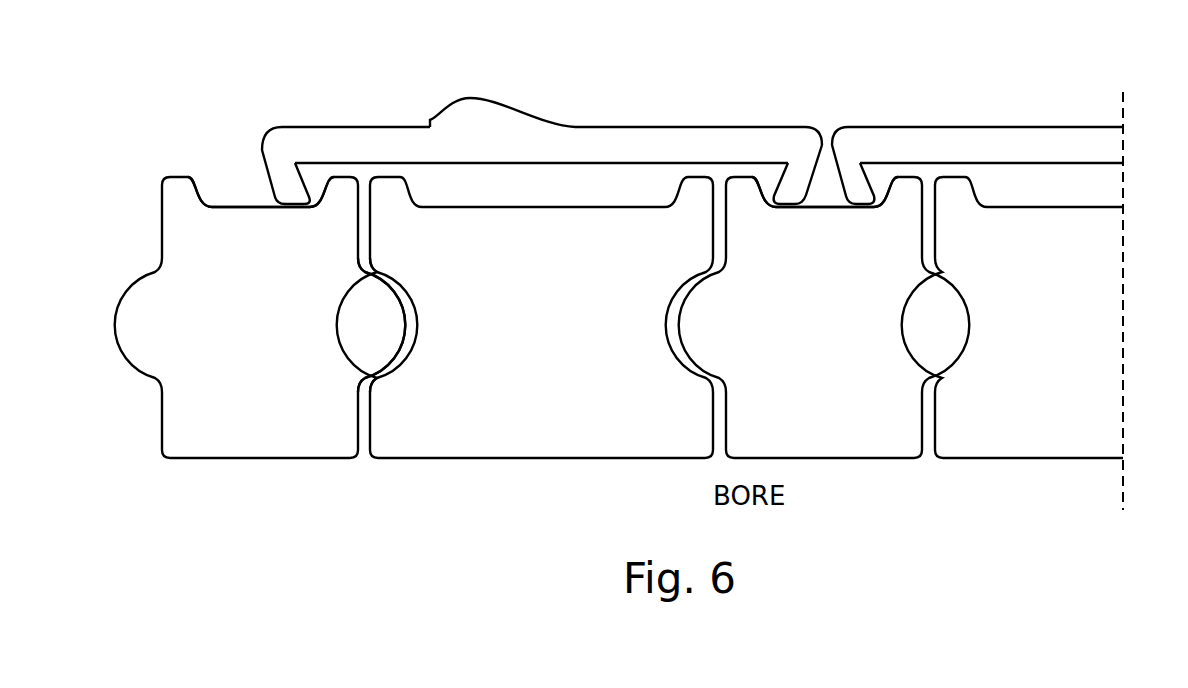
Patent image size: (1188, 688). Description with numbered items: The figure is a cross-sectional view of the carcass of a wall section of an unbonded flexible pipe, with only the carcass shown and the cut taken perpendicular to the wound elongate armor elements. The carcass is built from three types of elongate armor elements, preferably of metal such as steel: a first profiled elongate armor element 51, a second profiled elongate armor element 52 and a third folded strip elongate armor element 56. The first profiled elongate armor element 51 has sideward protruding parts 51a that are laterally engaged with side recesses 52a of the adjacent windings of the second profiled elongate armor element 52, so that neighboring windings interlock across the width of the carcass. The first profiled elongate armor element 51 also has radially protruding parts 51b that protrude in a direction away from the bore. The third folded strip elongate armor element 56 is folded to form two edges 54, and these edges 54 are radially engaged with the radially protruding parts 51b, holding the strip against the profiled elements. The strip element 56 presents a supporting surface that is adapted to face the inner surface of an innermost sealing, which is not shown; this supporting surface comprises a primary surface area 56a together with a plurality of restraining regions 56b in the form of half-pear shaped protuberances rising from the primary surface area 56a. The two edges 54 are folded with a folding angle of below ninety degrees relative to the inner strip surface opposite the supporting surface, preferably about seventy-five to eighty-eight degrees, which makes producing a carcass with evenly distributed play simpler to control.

The first profiled elongate armor element 51 is at (273, 423).
The sideward protruding parts 51a is at (391, 329).
The radially protruding parts 51b is at (343, 187).
The second profiled elongate armor element 52 is at (512, 423).
The side recess 52a is at (417, 313).
The edges 54 is at (285, 187).
The third folded strip elongate armor element 56 is at (295, 147).
The primary surface area 56a is at (362, 127).
The restraining regions 56b is at (462, 117).